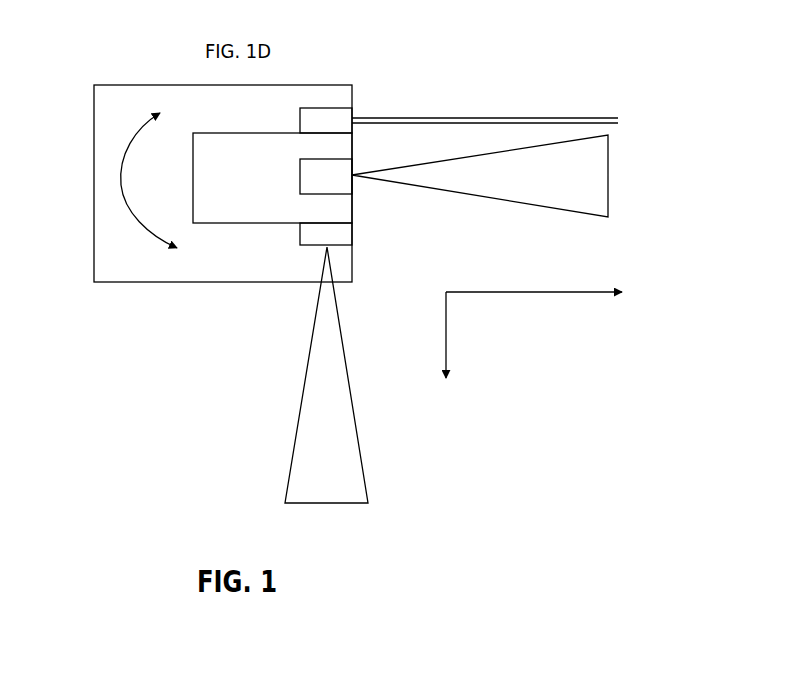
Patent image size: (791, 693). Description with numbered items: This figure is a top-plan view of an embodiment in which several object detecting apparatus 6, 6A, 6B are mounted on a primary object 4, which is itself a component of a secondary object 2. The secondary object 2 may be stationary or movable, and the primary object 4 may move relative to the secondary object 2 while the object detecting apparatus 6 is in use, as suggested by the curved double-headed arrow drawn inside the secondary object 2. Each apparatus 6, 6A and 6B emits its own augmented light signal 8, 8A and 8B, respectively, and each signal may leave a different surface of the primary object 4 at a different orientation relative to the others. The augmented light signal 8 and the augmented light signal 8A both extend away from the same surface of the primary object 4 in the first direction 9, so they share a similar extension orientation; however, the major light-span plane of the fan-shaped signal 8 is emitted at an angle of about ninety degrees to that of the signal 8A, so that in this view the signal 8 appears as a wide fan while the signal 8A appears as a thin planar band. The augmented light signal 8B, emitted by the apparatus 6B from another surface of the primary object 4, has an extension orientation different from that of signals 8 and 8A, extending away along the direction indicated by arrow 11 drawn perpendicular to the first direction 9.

The secondary object 2 is at (308, 85).
The primary object 4 is at (212, 132).
The object detecting apparatus 6 is at (352, 160).
The object detecting apparatus 6A is at (333, 108).
The object detecting apparatus 6B is at (335, 243).
The augmented light signal 8 is at (489, 206).
The augmented light signal 8A is at (508, 114).
The augmented light signal 8B is at (358, 399).
The first direction 9 is at (580, 293).
The vertical axis 11 is at (447, 339).